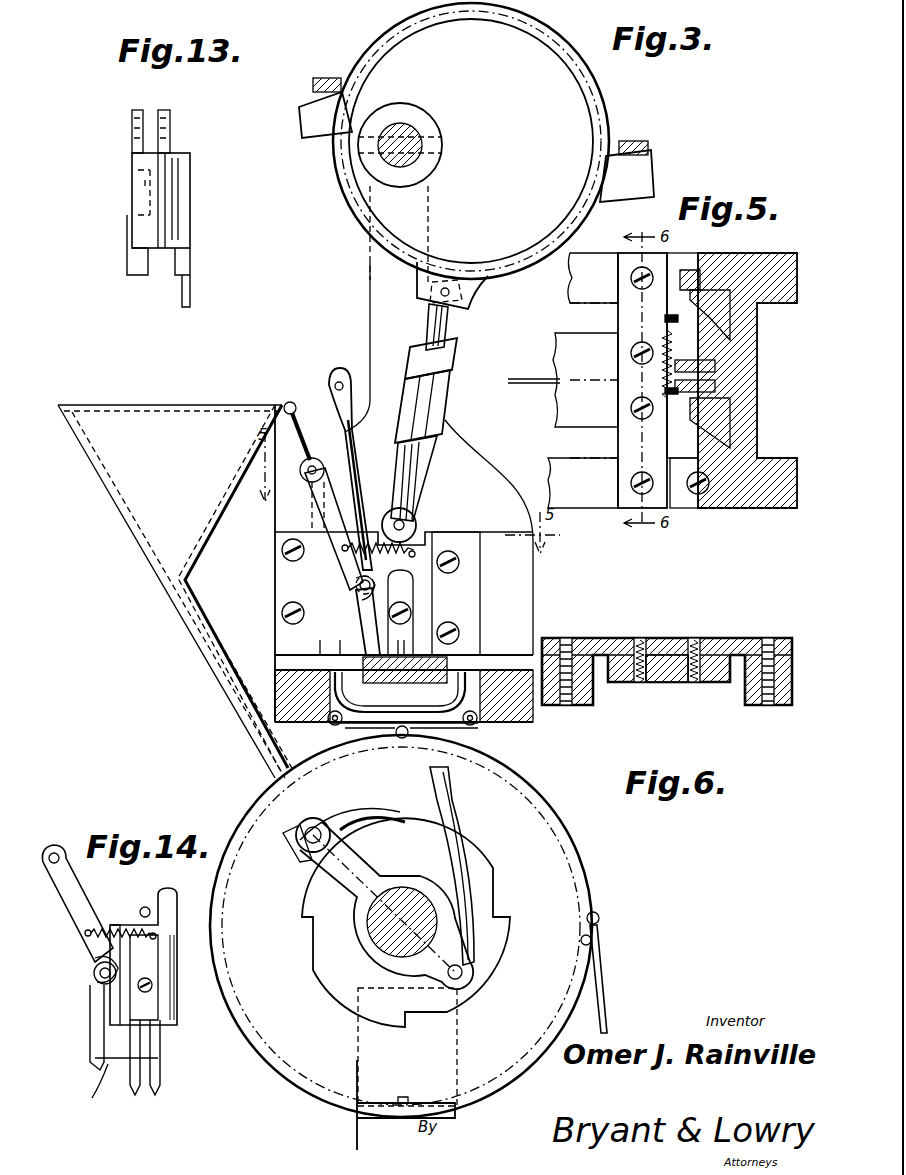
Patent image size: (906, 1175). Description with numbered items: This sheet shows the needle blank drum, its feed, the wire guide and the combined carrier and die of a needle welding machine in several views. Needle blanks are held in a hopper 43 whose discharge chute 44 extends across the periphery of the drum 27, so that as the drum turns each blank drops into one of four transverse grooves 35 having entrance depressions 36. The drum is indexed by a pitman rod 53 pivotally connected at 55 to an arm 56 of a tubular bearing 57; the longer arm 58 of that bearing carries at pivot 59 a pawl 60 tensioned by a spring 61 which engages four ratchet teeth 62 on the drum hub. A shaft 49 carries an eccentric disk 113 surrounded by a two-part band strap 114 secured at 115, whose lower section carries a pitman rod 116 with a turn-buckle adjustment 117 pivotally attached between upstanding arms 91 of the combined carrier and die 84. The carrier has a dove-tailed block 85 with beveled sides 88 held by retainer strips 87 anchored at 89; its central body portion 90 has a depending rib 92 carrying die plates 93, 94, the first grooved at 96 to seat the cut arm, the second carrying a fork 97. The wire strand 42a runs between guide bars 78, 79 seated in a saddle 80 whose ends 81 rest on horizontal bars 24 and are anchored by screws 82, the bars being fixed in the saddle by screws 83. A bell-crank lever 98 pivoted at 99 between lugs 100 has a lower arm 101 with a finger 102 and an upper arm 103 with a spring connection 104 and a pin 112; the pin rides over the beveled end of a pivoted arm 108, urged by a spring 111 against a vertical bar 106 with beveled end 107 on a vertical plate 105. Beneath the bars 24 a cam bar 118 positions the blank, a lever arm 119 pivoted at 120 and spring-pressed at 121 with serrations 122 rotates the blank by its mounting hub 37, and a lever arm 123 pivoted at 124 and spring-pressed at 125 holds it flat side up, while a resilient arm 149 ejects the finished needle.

In FIG. 3, the horizontal bars 24 is at (275, 668).
In FIG. 5, the horizontal bars 24 is at (548, 470).
In FIG. 6, the horizontal bars 24 is at (596, 702).
In FIG. 3, the needle blank supporting drum 27 is at (560, 884).
In FIG. 3, the transversely extending grooves 35 is at (408, 1100).
In FIG. 14, the transversely extending grooves 35 is at (212, 918).
In FIG. 3, the entrance depressions 36 is at (365, 1110).
In FIG. 14, the entrance depressions 36 is at (212, 905).
In FIG. 3, the mounting hub 37 is at (600, 920).
In FIG. 5, the wire strand 42a is at (522, 378).
In FIG. 6, the wire strand 42a is at (692, 640).
In FIG. 3, the hopper 43 is at (142, 500).
In FIG. 3, the discharge chute 44 is at (208, 675).
In FIG. 3, the shaft 49 is at (410, 138).
In FIG. 3, the pitman rod 53 is at (452, 796).
In FIG. 3, the pivotal connection 55 is at (466, 974).
In FIG. 3, the arm 56 is at (434, 1000).
In FIG. 3, the bearing 57 is at (380, 940).
In FIG. 3, the longer arm 58 is at (352, 860).
In FIG. 3, the pivot 59 is at (310, 824).
In FIG. 3, the pawl 60 is at (350, 814).
In FIG. 3, the spring 61 is at (300, 858).
In FIG. 3, the peripheral ratchet teeth 62 is at (305, 922).
In FIG. 3, the upper guide bar 78 is at (468, 648).
In FIG. 5, the upper guide bar 78 is at (556, 345).
In FIG. 6, the upper guide bar 78 is at (672, 640).
In FIG. 3, the lower guide bar 79 is at (494, 655).
In FIG. 6, the lower guide bar 79 is at (660, 684).
In FIG. 3, the saddle 80 is at (400, 684).
In FIG. 6, the saddle 80 is at (682, 684).
In FIG. 3, the saddle ends 81 is at (320, 645).
In FIG. 5, the saddle ends 81 is at (655, 264).
In FIG. 6, the saddle ends 81 is at (560, 638).
In FIG. 3, the screws 82 is at (270, 634).
In FIG. 5, the screws 82 is at (638, 268).
In FIG. 6, the screws 82 is at (572, 638).
In FIG. 5, the screws 83 is at (660, 362).
In FIG. 6, the screws 83 is at (640, 638).
In FIG. 13, the combined carrier and die 84 is at (202, 240).
In FIG. 14, the combined carrier and die 84 is at (84, 1016).
In FIG. 5, the block 85 is at (727, 410).
In FIG. 3, the retainer strips 87 is at (292, 585).
In FIG. 5, the retainer strips 87 is at (735, 362).
In FIG. 14, the beveled sides 88 is at (165, 985).
In FIG. 3, the anchoring 89 is at (290, 545).
In FIG. 5, the anchoring 89 is at (736, 348).
In FIG. 5, the horizontal central body portion 90 is at (682, 355).
In FIG. 3, the apertured upstanding arms 91 is at (398, 510).
In FIG. 5, the apertured upstanding arms 91 is at (716, 392).
In FIG. 13, the apertured upstanding arms 91 is at (160, 104).
In FIG. 14, the apertured upstanding arms 91 is at (150, 908).
In FIG. 3, the depending central rib 92 is at (412, 616).
In FIG. 5, the die plate 93 is at (654, 440).
In FIG. 13, the die plate 93 is at (140, 262).
In FIG. 3, the die plate 94 is at (405, 603).
In FIG. 5, the die plate 94 is at (716, 374).
In FIG. 13, the die plate 94 is at (190, 262).
In FIG. 14, the die plate 94 is at (160, 1008).
In FIG. 13, the groove 96 is at (138, 275).
In FIG. 13, the depending fork 97 is at (192, 298).
In FIG. 14, the depending fork 97 is at (156, 1076).
In FIG. 3, the bell-crank lever 98 is at (356, 585).
In FIG. 14, the bell-crank lever 98 is at (86, 964).
In FIG. 3, the pivot 99 is at (375, 588).
In FIG. 14, the pivot 99 is at (96, 972).
In FIG. 3, the lugs 100 is at (358, 596).
In FIG. 5, the lugs 100 is at (660, 332).
In FIG. 14, the lugs 100 is at (98, 980).
In FIG. 3, the lower arm 101 is at (402, 634).
In FIG. 14, the lower arm 101 is at (92, 1048).
In FIG. 14, the finger 102 is at (98, 1092).
In FIG. 3, the upper lever arm 103 is at (306, 480).
In FIG. 5, the upper lever arm 103 is at (632, 272).
In FIG. 14, the upper lever arm 103 is at (72, 908).
In FIG. 3, the spring connection 104 is at (414, 548).
In FIG. 5, the spring connection 104 is at (662, 388).
In FIG. 14, the spring connection 104 is at (120, 928).
In FIG. 3, the vertical plate 105 is at (316, 372).
In FIG. 5, the vertical plate 105 is at (752, 262).
In FIG. 3, the vertical bar 106 is at (350, 420).
In FIG. 5, the vertical bar 106 is at (738, 325).
In FIG. 3, the lower beveled end 107 is at (384, 520).
In FIG. 3, the arm 108 is at (306, 490).
In FIG. 3, the spring 111 is at (285, 412).
In FIG. 5, the spring 111 is at (712, 275).
In FIG. 3, the pin 112 is at (306, 456).
In FIG. 14, the pin 112 is at (57, 852).
In FIG. 3, the disk 113 is at (570, 112).
In FIG. 3, the two-part band strap 114 is at (612, 126).
In FIG. 3, the securing means 115 is at (322, 78).
In FIG. 3, the pitman rod 116 is at (420, 428).
In FIG. 3, the turn-buckle adjustment 117 is at (443, 392).
In FIG. 5, the cam bar 118 is at (560, 330).
In FIG. 3, the arm 119 is at (338, 735).
In FIG. 3, the pivot 120 is at (328, 725).
In FIG. 3, the spring 121 is at (402, 740).
In FIG. 3, the serrations 122 is at (382, 730).
In FIG. 3, the lever arm 123 is at (482, 735).
In FIG. 3, the pivot 124 is at (480, 724).
In FIG. 3, the spring 125 is at (452, 735).
In FIG. 3, the resilient arm 149 is at (604, 985).